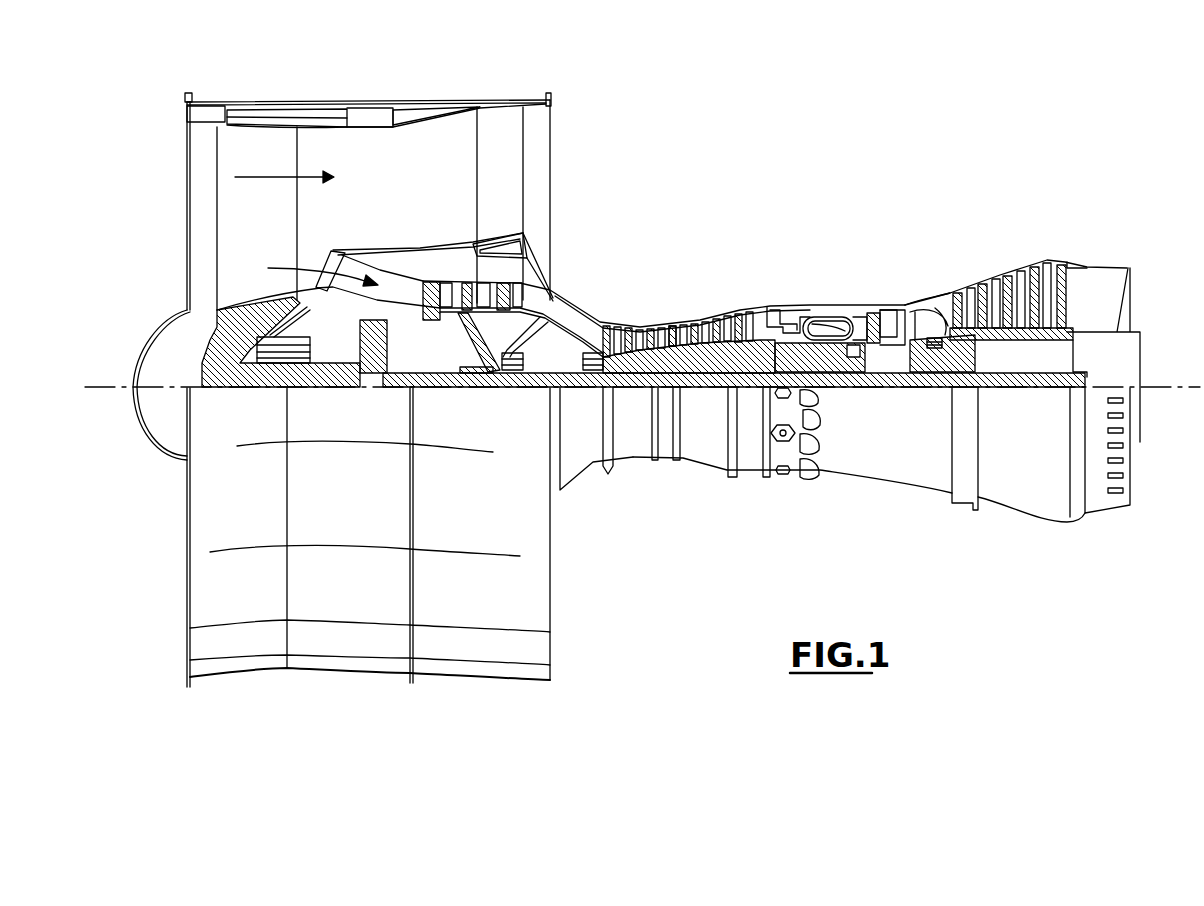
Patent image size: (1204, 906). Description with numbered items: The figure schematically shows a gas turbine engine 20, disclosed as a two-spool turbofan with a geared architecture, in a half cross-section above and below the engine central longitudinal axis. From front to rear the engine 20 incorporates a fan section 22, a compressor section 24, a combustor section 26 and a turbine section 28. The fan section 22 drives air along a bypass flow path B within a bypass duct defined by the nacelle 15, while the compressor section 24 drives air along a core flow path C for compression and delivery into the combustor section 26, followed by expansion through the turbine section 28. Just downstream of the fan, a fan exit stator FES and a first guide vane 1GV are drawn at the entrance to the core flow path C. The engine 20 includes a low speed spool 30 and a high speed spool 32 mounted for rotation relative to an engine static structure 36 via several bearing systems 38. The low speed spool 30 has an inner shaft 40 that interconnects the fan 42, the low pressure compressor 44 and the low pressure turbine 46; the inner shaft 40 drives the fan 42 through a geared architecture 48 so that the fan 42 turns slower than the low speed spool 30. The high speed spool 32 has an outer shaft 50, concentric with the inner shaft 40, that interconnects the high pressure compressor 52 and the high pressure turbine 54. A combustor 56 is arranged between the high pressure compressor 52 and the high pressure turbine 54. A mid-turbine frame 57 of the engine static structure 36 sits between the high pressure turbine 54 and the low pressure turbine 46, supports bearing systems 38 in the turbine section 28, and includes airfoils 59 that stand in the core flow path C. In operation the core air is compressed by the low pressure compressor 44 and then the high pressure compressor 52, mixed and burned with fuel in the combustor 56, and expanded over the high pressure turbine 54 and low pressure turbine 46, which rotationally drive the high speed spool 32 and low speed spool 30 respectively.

The nacelle 15 is at (368, 112).
The gas turbine engine 20 is at (835, 150).
The fan section 22 is at (298, 92).
The compressor section 24 is at (602, 290).
The combustor section 26 is at (822, 278).
The turbine section 28 is at (970, 242).
The low speed spool 30 is at (707, 400).
The high speed spool 32 is at (750, 325).
The engine static structure 36 is at (748, 485).
The bearing systems 38 is at (510, 388).
The inner shaft 40 is at (577, 390).
The fan 42 is at (271, 230).
The low pressure compressor 44 is at (470, 297).
The low pressure turbine 46 is at (1015, 290).
The geared architecture 48 is at (375, 388).
The outer shaft 50 is at (833, 389).
The high pressure compressor 52 is at (680, 323).
The high pressure turbine 54 is at (890, 310).
The combustor 56 is at (830, 326).
The mid-turbine frame 57 is at (934, 285).
The airfoils 59 is at (942, 327).
The bypass flow path B is at (272, 177).
The core flow path C is at (313, 270).
The fan exit stator FES is at (337, 267).
The first guide vane 1GV is at (412, 283).